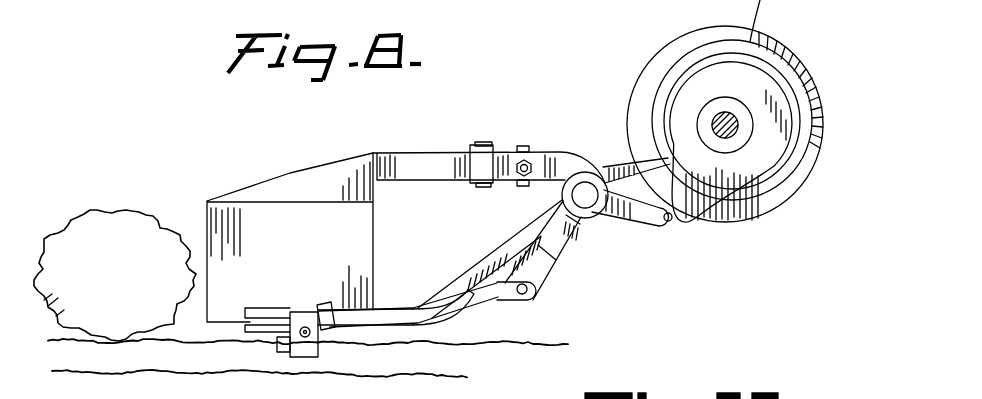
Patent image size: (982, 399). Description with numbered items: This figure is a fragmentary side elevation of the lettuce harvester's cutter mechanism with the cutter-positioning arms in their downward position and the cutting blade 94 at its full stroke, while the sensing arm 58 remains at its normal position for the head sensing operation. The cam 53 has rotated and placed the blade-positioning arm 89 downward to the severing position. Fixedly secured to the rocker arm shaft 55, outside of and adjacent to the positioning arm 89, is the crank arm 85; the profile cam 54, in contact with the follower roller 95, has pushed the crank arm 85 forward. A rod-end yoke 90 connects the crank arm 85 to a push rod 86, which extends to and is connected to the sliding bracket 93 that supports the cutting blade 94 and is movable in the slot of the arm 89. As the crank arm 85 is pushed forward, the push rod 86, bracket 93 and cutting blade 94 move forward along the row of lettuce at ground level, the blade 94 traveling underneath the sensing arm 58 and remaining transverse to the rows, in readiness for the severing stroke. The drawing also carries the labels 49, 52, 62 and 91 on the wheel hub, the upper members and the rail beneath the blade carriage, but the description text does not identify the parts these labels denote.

The wheel hub and axle 49 is at (718, 110).
The support member 52 is at (447, 5).
The wheel 53 is at (640, 82).
The cam plate 54 is at (780, 215).
The pivot 55 is at (585, 171).
The frame housing 58 is at (293, 174).
The arm 62 is at (502, 13).
The lever 85 is at (630, 220).
The link rod 86 is at (478, 300).
The link strap 89 is at (492, 247).
The pivot joint 90 is at (510, 302).
The guide rails 91 is at (325, 306).
The bracket block 93 is at (330, 347).
The stop 94 is at (282, 358).
The pivot pin 95 is at (675, 226).